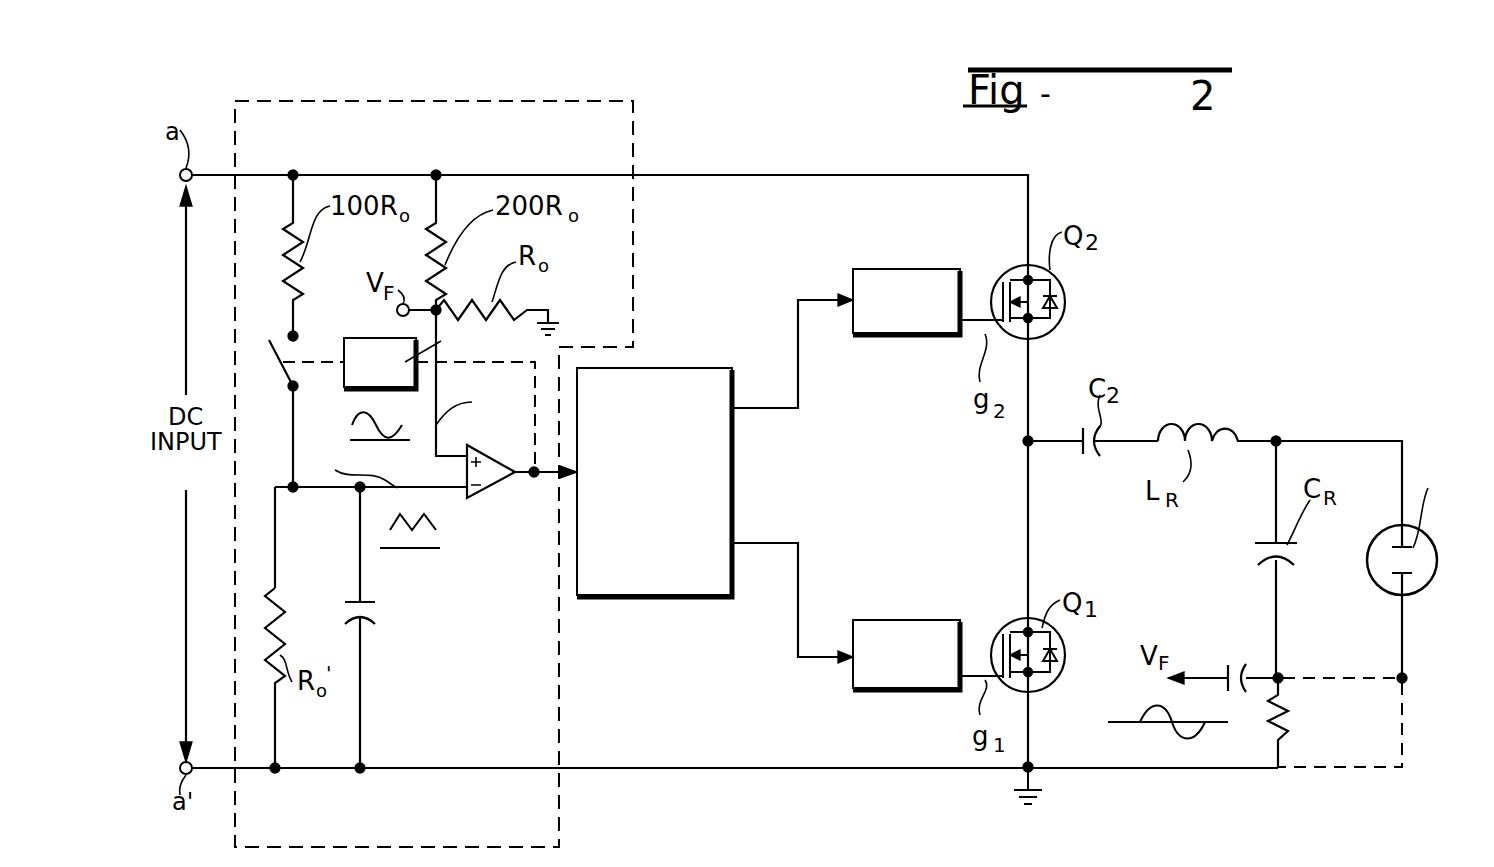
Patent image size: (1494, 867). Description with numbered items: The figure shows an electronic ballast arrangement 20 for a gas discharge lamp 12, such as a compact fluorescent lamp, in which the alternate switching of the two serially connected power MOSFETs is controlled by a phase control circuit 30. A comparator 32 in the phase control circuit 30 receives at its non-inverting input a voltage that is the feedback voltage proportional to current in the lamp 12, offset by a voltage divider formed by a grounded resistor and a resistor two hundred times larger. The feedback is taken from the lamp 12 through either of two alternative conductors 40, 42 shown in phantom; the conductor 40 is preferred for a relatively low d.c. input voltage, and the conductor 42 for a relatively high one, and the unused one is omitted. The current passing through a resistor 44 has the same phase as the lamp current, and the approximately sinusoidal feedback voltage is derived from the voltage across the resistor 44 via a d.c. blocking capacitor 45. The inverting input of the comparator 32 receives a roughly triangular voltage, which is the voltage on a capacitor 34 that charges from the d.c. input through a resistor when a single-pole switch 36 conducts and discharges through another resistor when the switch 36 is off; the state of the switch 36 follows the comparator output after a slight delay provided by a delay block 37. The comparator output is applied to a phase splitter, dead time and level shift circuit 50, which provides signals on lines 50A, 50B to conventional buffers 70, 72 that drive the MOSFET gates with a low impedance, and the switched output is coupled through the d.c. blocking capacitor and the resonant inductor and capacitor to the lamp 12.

The lamp 12 is at (1437, 552).
The electronic ballast arrangement 20 is at (832, 130).
The phase control circuit 30 is at (582, 101).
The comparator 32 is at (498, 492).
The capacitor 34 is at (368, 614).
The single-pole switch 36 is at (281, 354).
The delay circuit 37 is at (362, 338).
The conductor 40 is at (1340, 676).
The conductor 42 is at (1340, 767).
The resistor 44 is at (1290, 720).
The d.c. blocking capacitor 45 is at (1228, 665).
The phase splitter, dead time & level shift circuit 50 is at (670, 368).
The line 50A is at (800, 410).
The line 50B is at (800, 590).
The buffer 70 is at (900, 269).
The buffer 72 is at (924, 620).